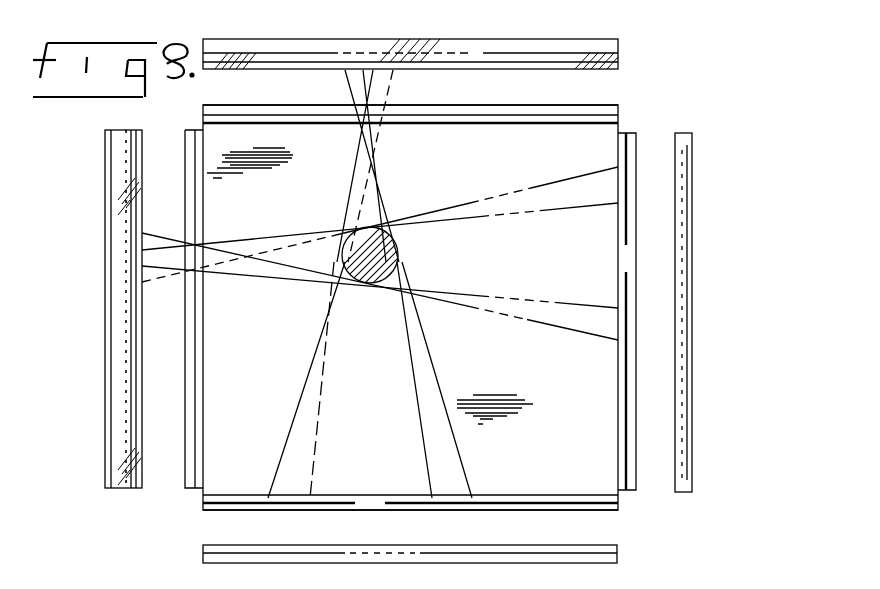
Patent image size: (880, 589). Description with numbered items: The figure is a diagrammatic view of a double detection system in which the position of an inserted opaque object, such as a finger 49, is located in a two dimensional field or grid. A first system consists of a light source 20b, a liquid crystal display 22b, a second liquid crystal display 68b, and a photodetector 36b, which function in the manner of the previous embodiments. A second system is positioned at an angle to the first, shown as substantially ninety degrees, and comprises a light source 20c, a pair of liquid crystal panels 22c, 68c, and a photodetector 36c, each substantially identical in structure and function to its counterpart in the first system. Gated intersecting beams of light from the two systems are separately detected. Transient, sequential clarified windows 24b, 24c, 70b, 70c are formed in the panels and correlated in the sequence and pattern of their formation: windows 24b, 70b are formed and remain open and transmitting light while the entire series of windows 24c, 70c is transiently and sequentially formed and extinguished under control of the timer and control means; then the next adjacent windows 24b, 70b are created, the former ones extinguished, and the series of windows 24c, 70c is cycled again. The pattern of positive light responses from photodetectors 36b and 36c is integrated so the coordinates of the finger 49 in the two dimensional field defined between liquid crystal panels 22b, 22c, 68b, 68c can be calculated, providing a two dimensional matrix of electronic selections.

The light source 20b is at (478, 43).
The light source 20c is at (125, 488).
The liquid crystal display 22b is at (493, 120).
The liquid crystal panel 22c is at (201, 333).
The clarified window 24b is at (377, 128).
The clarified window 24c is at (196, 257).
The photodetector 36b is at (468, 550).
The photodetector 36c is at (684, 294).
The finger 49 is at (370, 288).
The second liquid crystal display 68b is at (410, 479).
The liquid crystal panel 68c is at (582, 311).
The clarified window 70b is at (371, 500).
The clarified window 70c is at (625, 258).